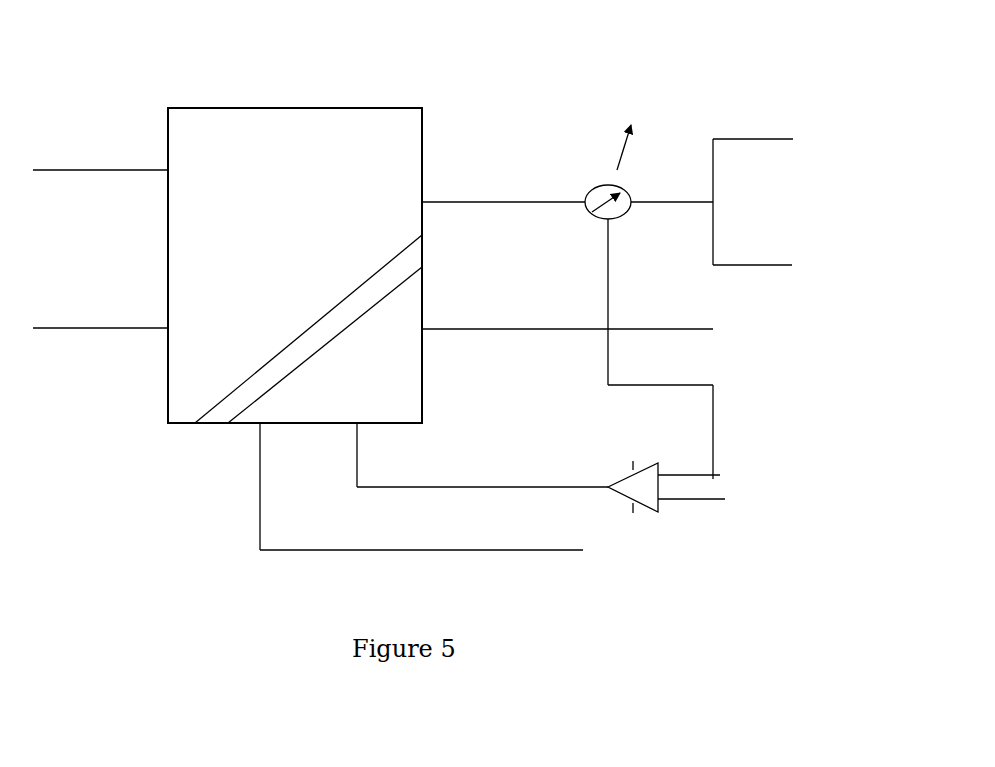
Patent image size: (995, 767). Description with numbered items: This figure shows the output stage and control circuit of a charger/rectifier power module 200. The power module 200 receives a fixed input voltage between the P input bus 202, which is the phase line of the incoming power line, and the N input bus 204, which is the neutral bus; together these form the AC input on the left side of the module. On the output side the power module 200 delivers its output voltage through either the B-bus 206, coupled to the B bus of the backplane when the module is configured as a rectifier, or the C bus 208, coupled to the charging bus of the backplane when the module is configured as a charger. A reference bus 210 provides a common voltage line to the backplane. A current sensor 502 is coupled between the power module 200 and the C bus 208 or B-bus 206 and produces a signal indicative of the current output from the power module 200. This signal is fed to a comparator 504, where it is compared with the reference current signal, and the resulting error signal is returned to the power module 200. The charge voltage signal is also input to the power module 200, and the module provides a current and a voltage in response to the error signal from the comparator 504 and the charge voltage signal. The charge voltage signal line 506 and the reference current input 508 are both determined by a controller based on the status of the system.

The power module 200 is at (467, 137).
The P input bus 202 is at (118, 170).
The N input bus 204 is at (80, 325).
The B-bus 206 is at (800, 255).
The C bus 208 is at (803, 134).
The reference bus 210 is at (713, 325).
The current sensor 502 is at (593, 185).
The comparator 504 is at (628, 475).
The Chrg_V signal line 506 is at (503, 548).
The Ref I reference input 508 is at (698, 497).